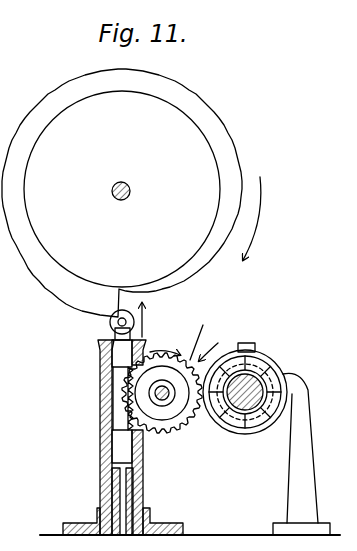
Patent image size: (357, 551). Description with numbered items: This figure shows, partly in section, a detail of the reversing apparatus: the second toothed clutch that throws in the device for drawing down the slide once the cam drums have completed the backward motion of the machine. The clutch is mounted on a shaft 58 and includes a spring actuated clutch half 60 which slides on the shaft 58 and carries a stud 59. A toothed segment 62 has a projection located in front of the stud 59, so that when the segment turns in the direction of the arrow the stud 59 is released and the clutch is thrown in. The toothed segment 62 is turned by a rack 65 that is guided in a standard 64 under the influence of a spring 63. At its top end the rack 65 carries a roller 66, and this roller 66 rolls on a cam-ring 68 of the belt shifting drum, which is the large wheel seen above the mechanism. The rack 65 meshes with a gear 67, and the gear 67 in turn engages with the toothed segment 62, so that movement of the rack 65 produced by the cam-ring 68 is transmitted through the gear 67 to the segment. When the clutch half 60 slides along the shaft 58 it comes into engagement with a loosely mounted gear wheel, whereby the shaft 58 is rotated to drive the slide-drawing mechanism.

The shaft 58 is at (237, 433).
The stud 59 is at (254, 351).
The spring actuated clutch half 60 is at (273, 373).
The toothed segment 62 is at (197, 424).
The spring 63 is at (112, 482).
The standard 64 is at (143, 480).
The rack 65 is at (117, 389).
The roller 66 is at (109, 322).
The gear 67 is at (204, 332).
The cam-ring 68 is at (62, 288).